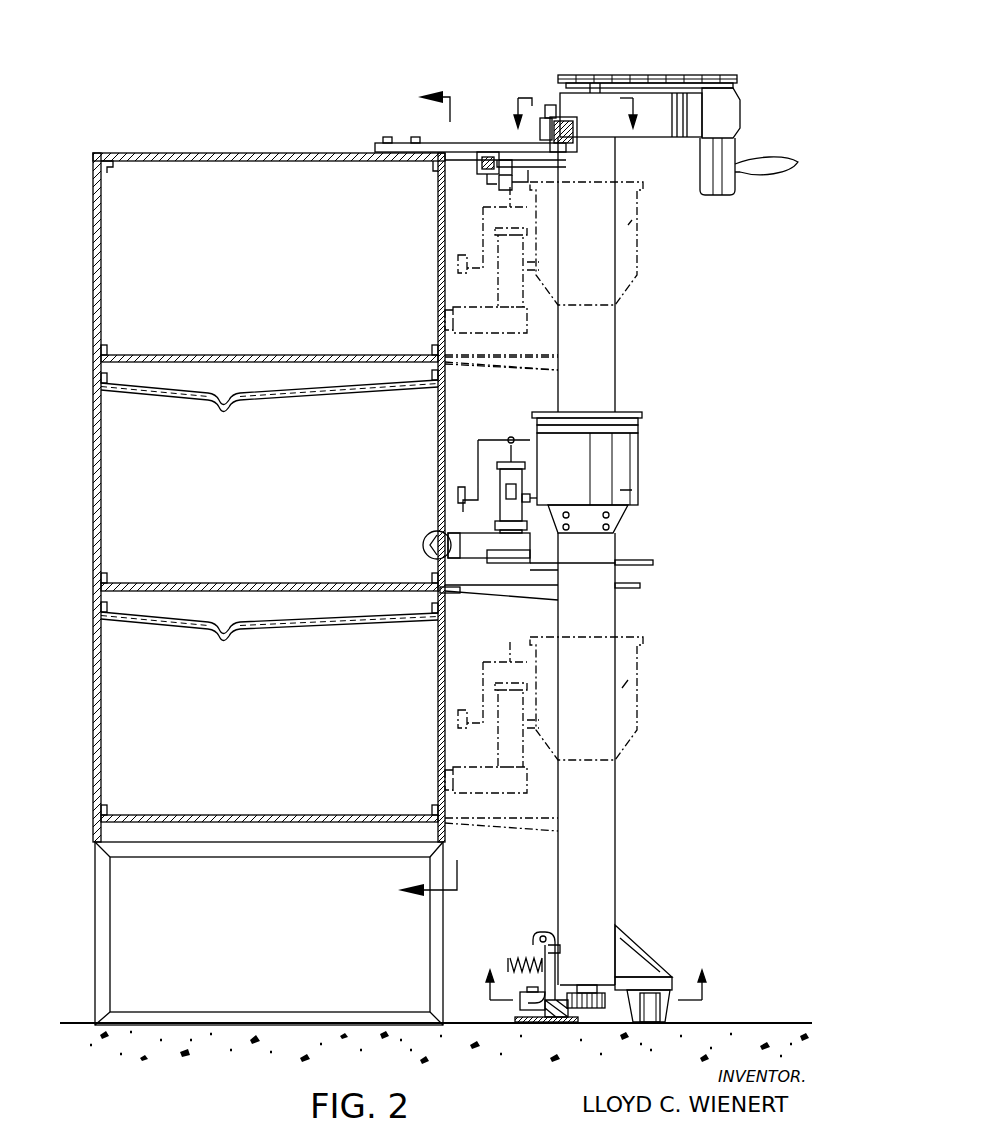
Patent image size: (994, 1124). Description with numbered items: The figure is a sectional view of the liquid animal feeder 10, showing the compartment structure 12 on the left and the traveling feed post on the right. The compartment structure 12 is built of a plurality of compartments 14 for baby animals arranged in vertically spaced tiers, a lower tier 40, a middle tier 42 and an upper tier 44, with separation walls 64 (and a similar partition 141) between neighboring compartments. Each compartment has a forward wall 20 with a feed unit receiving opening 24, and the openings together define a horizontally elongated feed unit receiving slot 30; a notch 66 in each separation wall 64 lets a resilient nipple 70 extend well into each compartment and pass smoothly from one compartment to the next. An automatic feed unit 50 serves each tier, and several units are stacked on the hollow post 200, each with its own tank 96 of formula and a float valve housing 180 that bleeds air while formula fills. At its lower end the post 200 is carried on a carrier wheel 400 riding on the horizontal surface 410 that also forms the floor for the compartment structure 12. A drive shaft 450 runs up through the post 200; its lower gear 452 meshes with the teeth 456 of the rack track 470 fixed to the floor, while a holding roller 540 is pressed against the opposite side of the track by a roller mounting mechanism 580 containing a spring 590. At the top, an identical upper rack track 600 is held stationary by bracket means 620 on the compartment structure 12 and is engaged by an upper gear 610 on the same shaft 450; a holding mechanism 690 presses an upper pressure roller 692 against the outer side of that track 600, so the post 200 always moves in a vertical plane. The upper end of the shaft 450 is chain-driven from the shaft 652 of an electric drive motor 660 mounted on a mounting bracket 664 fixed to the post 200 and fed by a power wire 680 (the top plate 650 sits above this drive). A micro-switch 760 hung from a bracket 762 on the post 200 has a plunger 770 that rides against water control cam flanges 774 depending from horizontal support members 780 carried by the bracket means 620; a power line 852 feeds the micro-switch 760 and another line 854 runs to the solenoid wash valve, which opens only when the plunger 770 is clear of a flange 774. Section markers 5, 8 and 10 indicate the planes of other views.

The compartment structure 12 is at (210, 152).
The upper tier 44 is at (110, 283).
The compartments 14 is at (108, 412).
The middle tier 42 is at (102, 510).
The separation wall 64 is at (361, 577).
The lower tier 40 is at (102, 664).
The base frame 141 is at (102, 779).
The liquid animal feeder 10 is at (444, 478).
The section line 5- 5 is at (577, 113).
The section line 8- 8 is at (594, 991).
The horizontal surface 410 is at (748, 1022).
The upper rack track 600 is at (566, 150).
The top plate 650 is at (648, 75).
The motor shaft 652 is at (735, 84).
The drive shaft 450 is at (590, 82).
The mounting bracket 664 is at (724, 113).
The drive motor 660 is at (727, 157).
The power wire 680 is at (780, 168).
The upper gear 610 is at (578, 133).
The upper pressure roller 692 is at (553, 104).
The holding mechanism 690 is at (546, 118).
The bracket means 620 is at (474, 144).
The support members 780 is at (497, 160).
The water control cam flanges 774 is at (480, 171).
The plunger 770 is at (486, 168).
The micro-switch 760 is at (500, 172).
The bracket 762 is at (508, 172).
The power line 852 is at (512, 168).
The line 854 is at (520, 172).
The automatic feed unit 50 is at (645, 242).
The tank 96 is at (636, 232).
The float valve housing 180 is at (503, 482).
The forward wall 20 is at (443, 352).
The feed unit receiving opening 24 is at (446, 540).
The notch 66 is at (423, 543).
The feed unit receiving slot 30 is at (442, 566).
The nipple 70 is at (447, 357).
The post 200 is at (618, 606).
The carrier wheel 400 is at (660, 1023).
The lower gear 452 is at (592, 1000).
The rack track 470 is at (545, 1023).
The teeth 456 is at (569, 1023).
The holding roller 540 is at (520, 1018).
The spring 590 is at (540, 962).
The roller mounting mechanism 580 is at (537, 958).